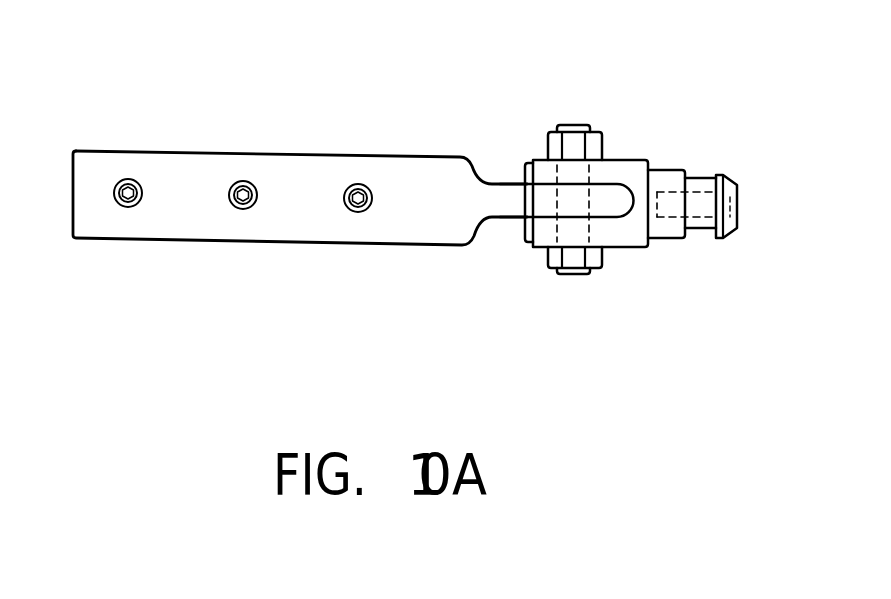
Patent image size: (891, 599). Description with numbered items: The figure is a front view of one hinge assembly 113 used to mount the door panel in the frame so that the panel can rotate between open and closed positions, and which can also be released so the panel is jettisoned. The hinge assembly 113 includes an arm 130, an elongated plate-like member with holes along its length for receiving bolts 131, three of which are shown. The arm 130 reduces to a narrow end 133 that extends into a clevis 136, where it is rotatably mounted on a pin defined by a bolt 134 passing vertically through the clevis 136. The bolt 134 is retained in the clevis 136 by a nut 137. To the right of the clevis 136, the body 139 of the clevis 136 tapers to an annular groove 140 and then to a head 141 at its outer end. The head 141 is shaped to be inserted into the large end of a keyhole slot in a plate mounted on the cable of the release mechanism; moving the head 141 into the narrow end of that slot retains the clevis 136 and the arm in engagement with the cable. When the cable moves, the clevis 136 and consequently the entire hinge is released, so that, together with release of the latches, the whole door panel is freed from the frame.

The hinge assembly 113 is at (155, 116).
The arm 130 is at (193, 162).
The bolts 131 is at (357, 205).
The narrow end 133 is at (500, 190).
The bolt 134 is at (543, 263).
The clevis 136 is at (628, 234).
The nut 137 is at (597, 140).
The body 139 is at (668, 172).
The annular groove 140 is at (708, 180).
The head 141 is at (735, 203).